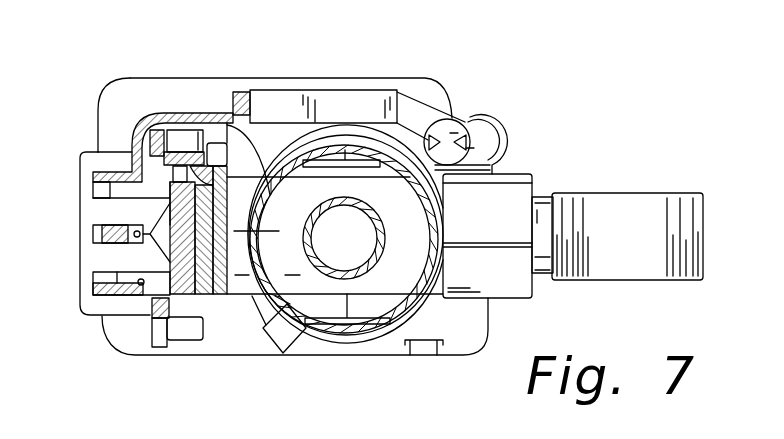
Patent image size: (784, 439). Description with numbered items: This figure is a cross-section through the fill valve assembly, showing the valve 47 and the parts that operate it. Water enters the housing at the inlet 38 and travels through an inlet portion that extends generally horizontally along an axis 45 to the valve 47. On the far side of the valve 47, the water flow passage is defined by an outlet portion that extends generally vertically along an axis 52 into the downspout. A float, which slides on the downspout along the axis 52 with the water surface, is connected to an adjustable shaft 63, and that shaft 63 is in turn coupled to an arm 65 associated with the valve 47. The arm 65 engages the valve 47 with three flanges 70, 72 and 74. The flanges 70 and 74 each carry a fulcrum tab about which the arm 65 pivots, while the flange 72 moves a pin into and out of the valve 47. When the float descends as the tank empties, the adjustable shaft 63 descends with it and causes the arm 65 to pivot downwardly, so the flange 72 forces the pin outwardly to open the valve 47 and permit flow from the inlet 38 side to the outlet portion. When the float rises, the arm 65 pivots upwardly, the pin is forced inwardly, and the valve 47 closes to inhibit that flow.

The inlet 38 is at (580, 175).
The axis 45 is at (266, 222).
The valve 47 is at (183, 362).
The axis 52 is at (345, 235).
The adjustable shaft 63 is at (462, 122).
The arm 65 is at (305, 105).
The flange 70 is at (118, 172).
The flange 72 is at (110, 225).
The flange 74 is at (100, 298).